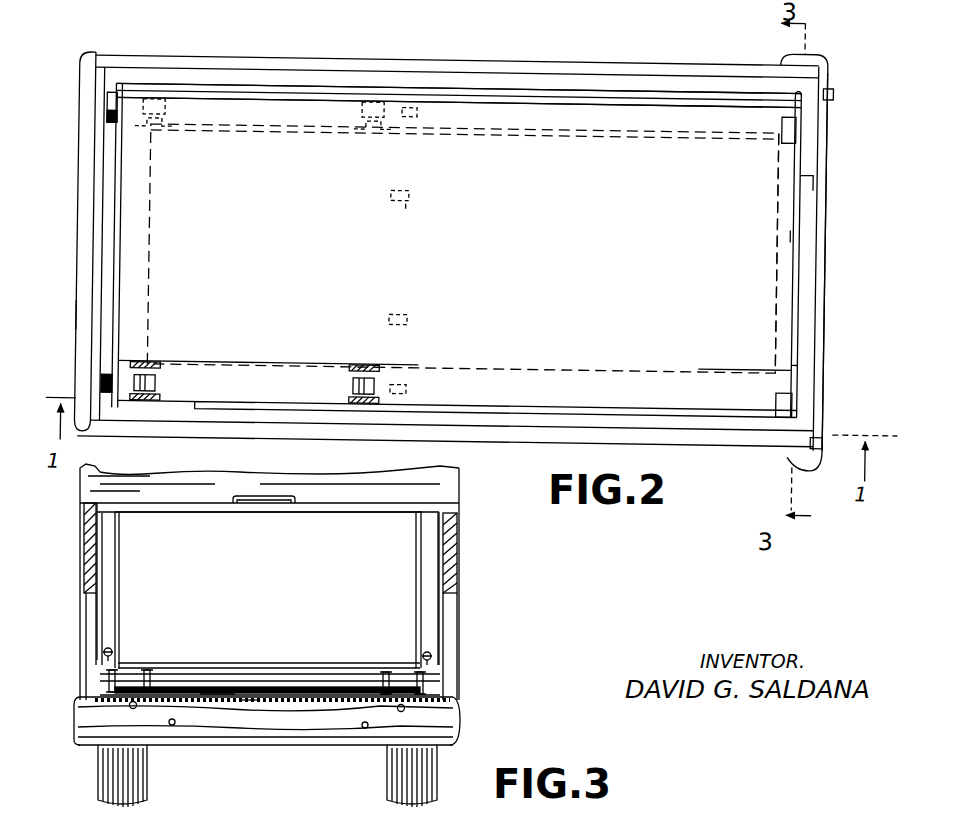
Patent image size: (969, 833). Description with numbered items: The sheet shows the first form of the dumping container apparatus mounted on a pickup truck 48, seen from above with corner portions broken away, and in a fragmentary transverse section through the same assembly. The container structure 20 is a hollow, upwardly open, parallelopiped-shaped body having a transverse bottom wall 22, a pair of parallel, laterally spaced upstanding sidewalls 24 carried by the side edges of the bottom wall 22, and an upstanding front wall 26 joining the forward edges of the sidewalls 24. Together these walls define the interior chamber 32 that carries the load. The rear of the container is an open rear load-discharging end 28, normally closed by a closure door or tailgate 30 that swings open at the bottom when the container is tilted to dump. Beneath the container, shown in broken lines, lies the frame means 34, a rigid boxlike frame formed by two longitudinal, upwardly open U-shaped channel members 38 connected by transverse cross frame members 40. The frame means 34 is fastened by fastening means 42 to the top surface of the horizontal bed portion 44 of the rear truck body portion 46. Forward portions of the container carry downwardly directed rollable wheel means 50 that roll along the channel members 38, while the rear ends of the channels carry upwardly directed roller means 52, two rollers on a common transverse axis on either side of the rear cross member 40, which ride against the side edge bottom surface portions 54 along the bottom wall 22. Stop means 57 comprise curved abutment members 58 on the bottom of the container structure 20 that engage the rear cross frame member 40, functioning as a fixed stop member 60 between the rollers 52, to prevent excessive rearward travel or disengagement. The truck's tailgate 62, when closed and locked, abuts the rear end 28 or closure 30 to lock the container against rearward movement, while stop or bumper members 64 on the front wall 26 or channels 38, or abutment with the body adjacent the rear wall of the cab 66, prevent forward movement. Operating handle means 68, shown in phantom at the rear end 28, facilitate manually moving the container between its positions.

In FIG. 2, the container structure 20 is at (605, 98).
In FIG. 3, the container structure 20 is at (418, 614).
In FIG. 2, the bottom wall 22 is at (525, 155).
In FIG. 3, the bottom wall 22 is at (280, 676).
In FIG. 2, the sidewalls 24 is at (318, 104).
In FIG. 3, the sidewalls 24 is at (107, 570).
In FIG. 2, the front wall 26 is at (122, 300).
In FIG. 2, the open rear load-discharging end 28 is at (801, 172).
In FIG. 2, the closure door or tailgate 30 is at (793, 288).
In FIG. 3, the closure door or tailgate 30 is at (152, 533).
In FIG. 2, the hollow interior or chamber 32 is at (462, 248).
In FIG. 3, the hollow interior or chamber 32 is at (352, 515).
In FIG. 2, the frame means 34 is at (210, 128).
In FIG. 3, the frame means 34 is at (105, 672).
In FIG. 2, the U-shaped channel members 38 is at (425, 130).
In FIG. 3, the U-shaped channel members 38 is at (100, 692).
In FIG. 2, the cross frame members 40 is at (777, 195).
In FIG. 3, the cross frame members 40 is at (276, 678).
In FIG. 3, the fastening means 42 is at (100, 706).
In FIG. 2, the horizontal bed portion 44 is at (240, 360).
In FIG. 3, the horizontal bed portion 44 is at (250, 700).
In FIG. 2, the rear truck body portion 46 is at (655, 448).
In FIG. 3, the rear truck body portion 46 is at (495, 556).
In FIG. 2, the pickup truck 48 is at (405, 32).
In FIG. 3, the pickup truck 48 is at (475, 630).
In FIG. 2, the rollable wheel means 50 is at (155, 95).
In FIG. 2, the roller means 52 is at (772, 118).
In FIG. 3, the roller means 52 is at (152, 650).
In FIG. 3, the side edge bottom surface portions 54 is at (165, 668).
In FIG. 2, the stop means 57 is at (420, 110).
In FIG. 2, the curved abutment members 58 is at (408, 190).
In FIG. 2, the fixed stop member 60 is at (788, 226).
In FIG. 3, the fixed stop member 60 is at (225, 697).
In FIG. 2, the tailgate of pickup truck body 62 is at (824, 110).
In FIG. 2, the stop or bumper members 64 is at (104, 106).
In FIG. 2, the cab 66 is at (100, 292).
In FIG. 2, the operating handle means 68 is at (803, 258).
In FIG. 3, the operating handle means 68 is at (264, 496).